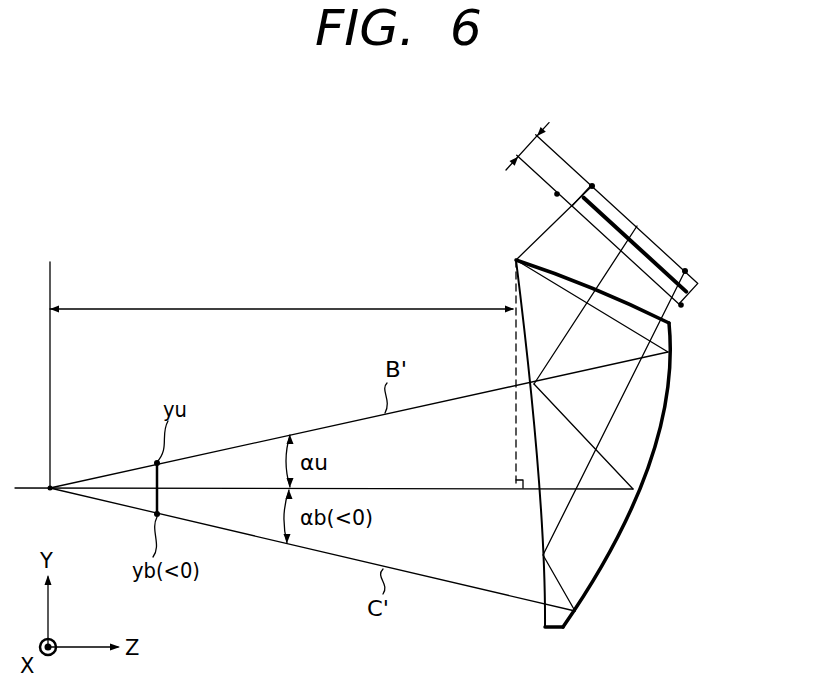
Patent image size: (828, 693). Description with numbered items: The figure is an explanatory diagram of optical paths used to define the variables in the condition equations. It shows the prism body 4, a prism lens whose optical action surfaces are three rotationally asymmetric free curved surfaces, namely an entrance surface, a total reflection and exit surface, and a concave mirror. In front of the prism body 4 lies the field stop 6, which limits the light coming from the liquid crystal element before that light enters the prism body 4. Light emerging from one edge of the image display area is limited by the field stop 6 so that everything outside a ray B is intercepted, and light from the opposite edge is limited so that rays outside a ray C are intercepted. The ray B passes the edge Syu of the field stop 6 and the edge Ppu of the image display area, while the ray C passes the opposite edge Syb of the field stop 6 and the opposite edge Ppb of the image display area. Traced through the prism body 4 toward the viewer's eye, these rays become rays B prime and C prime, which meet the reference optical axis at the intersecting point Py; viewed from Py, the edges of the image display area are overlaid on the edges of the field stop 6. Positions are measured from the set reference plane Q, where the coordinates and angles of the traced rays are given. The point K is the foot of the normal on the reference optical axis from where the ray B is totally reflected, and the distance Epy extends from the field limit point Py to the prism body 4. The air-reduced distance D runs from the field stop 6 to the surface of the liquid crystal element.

The prism body 4 is at (600, 420).
The field stop 6 is at (607, 252).
The ray B is at (535, 247).
The ray C is at (670, 318).
The edge of field stop Syu is at (557, 194).
The edge of field stop Syb is at (686, 304).
The edge of image display area Ppu is at (594, 186).
The edge of image display area Ppb is at (688, 268).
The air-reduced distance D is at (528, 147).
The intersecting point Py is at (50, 490).
The distance Epy is at (282, 297).
The point of normal line K is at (515, 500).
The set reference plane Q is at (155, 478).